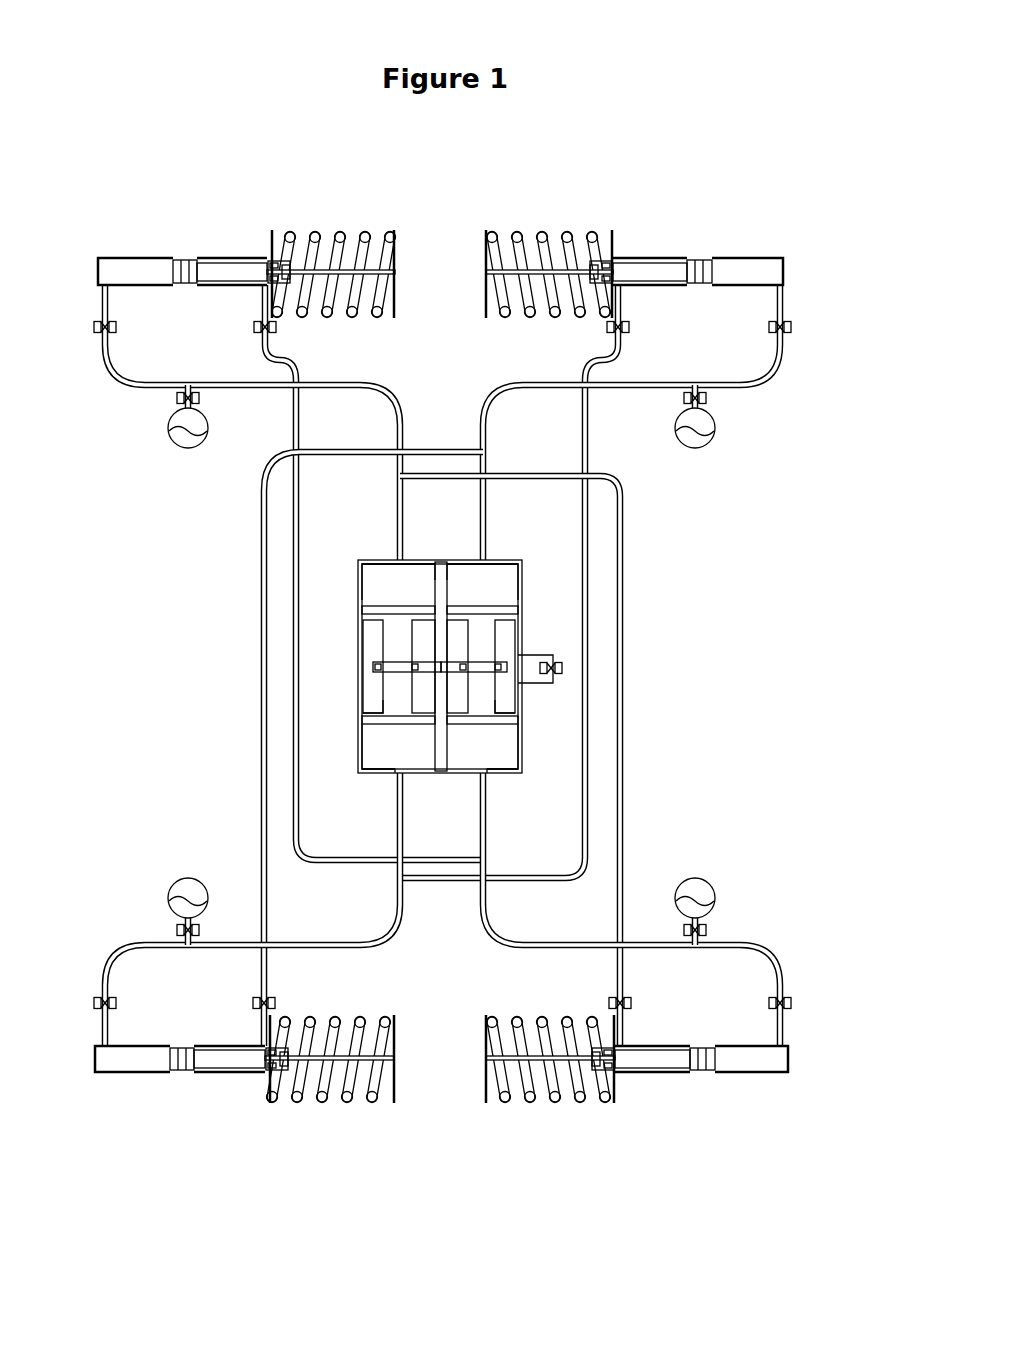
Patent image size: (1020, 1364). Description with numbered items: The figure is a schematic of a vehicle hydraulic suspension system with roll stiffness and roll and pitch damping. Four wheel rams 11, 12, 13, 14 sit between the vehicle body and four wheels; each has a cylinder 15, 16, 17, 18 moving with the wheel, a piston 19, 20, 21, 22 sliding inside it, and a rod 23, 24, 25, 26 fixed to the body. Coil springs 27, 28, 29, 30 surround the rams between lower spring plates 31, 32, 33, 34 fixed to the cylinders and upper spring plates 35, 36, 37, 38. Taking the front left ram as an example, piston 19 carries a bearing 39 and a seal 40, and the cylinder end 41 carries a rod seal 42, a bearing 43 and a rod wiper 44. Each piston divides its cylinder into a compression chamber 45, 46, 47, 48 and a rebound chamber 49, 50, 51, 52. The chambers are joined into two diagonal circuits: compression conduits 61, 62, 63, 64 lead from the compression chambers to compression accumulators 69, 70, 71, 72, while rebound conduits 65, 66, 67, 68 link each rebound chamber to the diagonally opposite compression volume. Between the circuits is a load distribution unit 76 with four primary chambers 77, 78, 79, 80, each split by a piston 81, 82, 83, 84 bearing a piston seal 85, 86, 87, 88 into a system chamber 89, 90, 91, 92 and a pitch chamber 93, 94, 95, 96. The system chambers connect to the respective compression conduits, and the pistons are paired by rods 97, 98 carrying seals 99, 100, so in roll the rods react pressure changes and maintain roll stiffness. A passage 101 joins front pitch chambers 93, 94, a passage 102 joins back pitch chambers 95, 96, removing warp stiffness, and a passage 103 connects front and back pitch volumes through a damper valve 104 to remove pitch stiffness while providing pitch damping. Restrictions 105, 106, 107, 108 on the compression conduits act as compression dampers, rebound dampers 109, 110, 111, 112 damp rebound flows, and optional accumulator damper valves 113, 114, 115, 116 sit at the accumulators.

The front left wheel ram 11 is at (246, 221).
The front right wheel ram 12 is at (630, 221).
The back right wheel ram 13 is at (625, 1113).
The back left wheel ram 14 is at (249, 1111).
The cylinder 15 is at (256, 247).
The cylinder 16 is at (623, 261).
The cylinder 17 is at (625, 1077).
The cylinder 18 is at (249, 1080).
The piston 19 is at (174, 220).
The piston 20 is at (705, 262).
The piston 21 is at (722, 1073).
The piston 22 is at (160, 1073).
The rod 23 is at (233, 267).
The rod 24 is at (650, 268).
The rod 25 is at (665, 1073).
The rod 26 is at (230, 1073).
The coil spring 27 is at (342, 232).
The coil spring 28 is at (542, 232).
The coil spring 29 is at (555, 1101).
The coil spring 30 is at (320, 1101).
The lower spring plate 31 is at (271, 248).
The lower spring plate 32 is at (613, 240).
The lower spring plate 33 is at (616, 1101).
The lower spring plate 34 is at (268, 1100).
The upper spring plate 35 is at (395, 240).
The upper spring plate 36 is at (486, 240).
The upper spring plate 37 is at (486, 1101).
The upper spring plate 38 is at (393, 1101).
The bearing 39 is at (182, 257).
The seal 40 is at (193, 257).
The cylinder end 41 is at (282, 285).
The rod seal 42 is at (275, 257).
The bearing 43 is at (287, 259).
The rod wiper 44 is at (293, 259).
The front left compression chamber 45 is at (137, 287).
The front right compression chamber 46 is at (740, 287).
The back right compression chamber 47 is at (738, 1048).
The back left compression chamber 48 is at (137, 1045).
The front left rebound chamber 49 is at (220, 284).
The front right rebound chamber 50 is at (668, 284).
The back right rebound chamber 51 is at (668, 1048).
The back left rebound chamber 52 is at (213, 1046).
The front left compression conduit 61 is at (258, 390).
The front right compression conduit 62 is at (620, 390).
The back right compression conduit 63 is at (510, 942).
The back left compression conduit 64 is at (365, 942).
The front left rebound conduit 65 is at (300, 398).
The front right rebound conduit 66 is at (580, 400).
The back right rebound conduit 67 is at (618, 885).
The back left rebound conduit 68 is at (266, 885).
The front left compression accumulator 69 is at (148, 442).
The front right compression accumulator 70 is at (735, 442).
The back right compression accumulator 71 is at (735, 890).
The back left compression accumulator 72 is at (146, 890).
The load distribution unit 76 is at (491, 668).
The primary chamber 77 is at (369, 623).
The primary chamber 78 is at (509, 618).
The primary chamber 79 is at (507, 783).
The primary chamber 80 is at (369, 783).
The piston 81 is at (385, 603).
The piston 82 is at (492, 603).
The piston 83 is at (495, 745).
The piston 84 is at (387, 742).
The piston seal 85 is at (378, 610).
The piston seal 86 is at (500, 612).
The piston seal 87 is at (505, 726).
The piston seal 88 is at (387, 730).
The front left system chamber 89 is at (375, 575).
The front right system chamber 90 is at (495, 578).
The back right system chamber 91 is at (505, 754).
The back left system chamber 92 is at (378, 754).
The front left pitch chamber 93 is at (370, 630).
The front right pitch chamber 94 is at (508, 630).
The back right pitch chamber 95 is at (507, 705).
The back left pitch chamber 96 is at (375, 710).
The rod 97 is at (380, 650).
The rod 98 is at (490, 647).
The seal 99 is at (430, 672).
The seal 100 is at (505, 675).
The passage 101 is at (428, 648).
The passage 102 is at (408, 680).
The passage 103 is at (553, 655).
The damper valve 104 is at (562, 668).
The restriction 105 is at (102, 337).
The restriction 106 is at (782, 337).
The restriction 107 is at (782, 995).
The restriction 108 is at (102, 995).
The rebound damper 109 is at (262, 337).
The rebound damper 110 is at (622, 337).
The rebound damper 111 is at (610, 1000).
The rebound damper 112 is at (272, 1000).
The accumulator damper valve 113 is at (178, 402).
The accumulator damper valve 114 is at (705, 403).
The accumulator damper valve 115 is at (705, 928).
The accumulator damper valve 116 is at (178, 928).